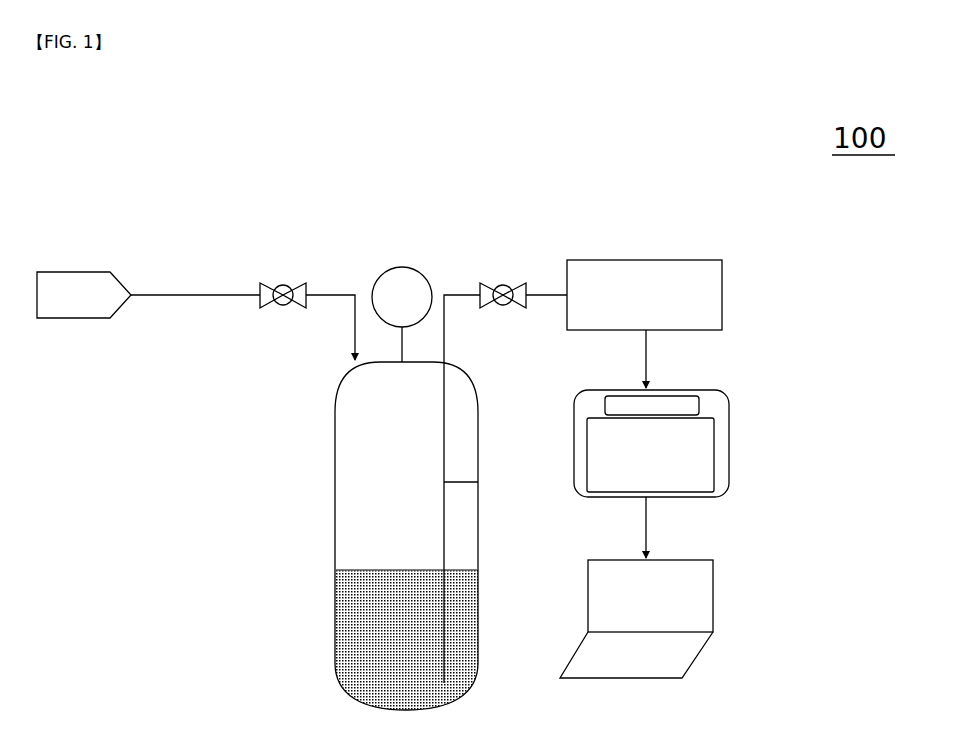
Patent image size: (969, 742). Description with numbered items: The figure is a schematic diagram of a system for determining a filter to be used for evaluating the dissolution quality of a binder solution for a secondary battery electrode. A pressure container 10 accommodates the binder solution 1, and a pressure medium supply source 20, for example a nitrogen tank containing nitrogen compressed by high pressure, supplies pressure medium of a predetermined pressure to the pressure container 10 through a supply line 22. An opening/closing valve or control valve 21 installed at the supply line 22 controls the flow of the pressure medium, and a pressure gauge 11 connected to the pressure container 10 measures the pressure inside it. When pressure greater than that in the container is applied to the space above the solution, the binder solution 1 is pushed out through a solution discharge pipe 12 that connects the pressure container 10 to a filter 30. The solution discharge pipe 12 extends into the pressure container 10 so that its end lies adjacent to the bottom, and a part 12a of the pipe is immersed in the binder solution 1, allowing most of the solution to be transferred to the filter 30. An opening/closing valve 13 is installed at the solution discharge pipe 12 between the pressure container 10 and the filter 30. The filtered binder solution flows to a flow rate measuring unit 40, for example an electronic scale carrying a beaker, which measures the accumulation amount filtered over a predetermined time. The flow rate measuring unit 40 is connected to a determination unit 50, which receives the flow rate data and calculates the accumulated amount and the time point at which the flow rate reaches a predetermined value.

The binder solution 1 is at (350, 663).
The pressure container 10 is at (322, 490).
The pressure gauge 11 is at (398, 281).
The solution discharge pipe 12 is at (444, 348).
The part of the solution discharge pipe 12a is at (478, 482).
The opening/closing valve 13 is at (503, 283).
The pressure medium supply source 20 is at (92, 287).
The opening/closing valve or control valve 21 is at (282, 290).
The supply line 22 is at (190, 293).
The filter 30 is at (639, 258).
The flow rate measuring unit 40 is at (730, 441).
The determination unit 50 is at (692, 603).